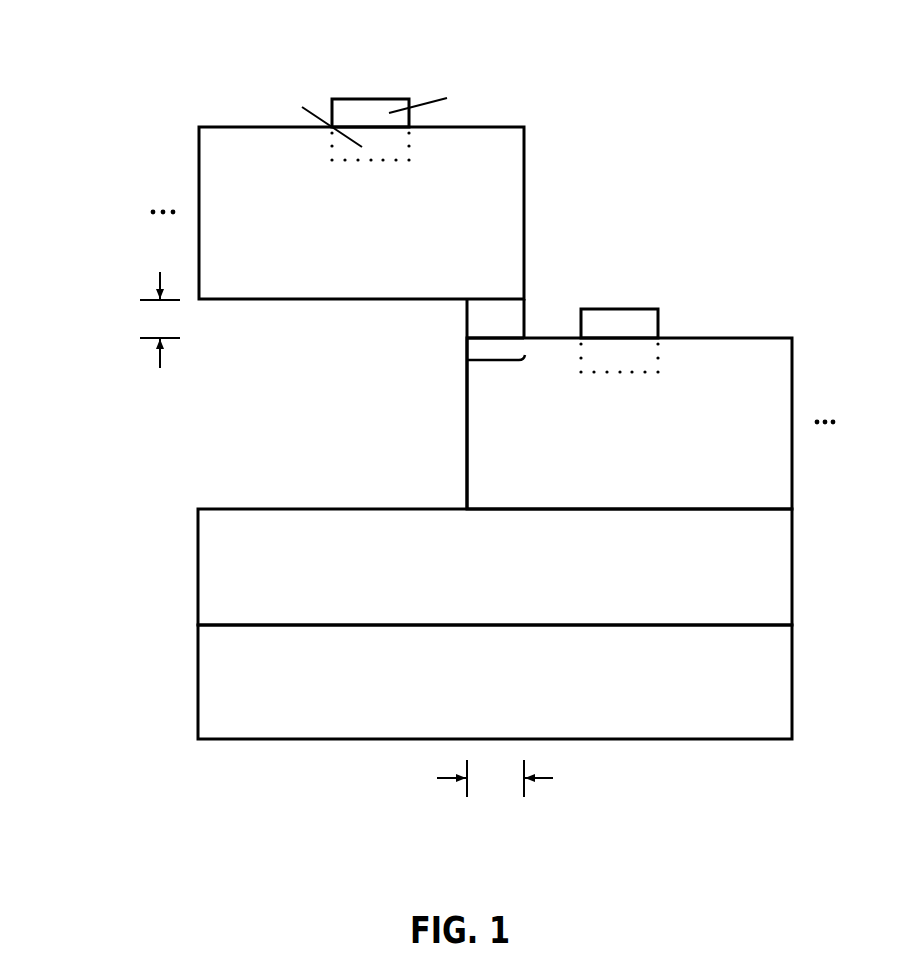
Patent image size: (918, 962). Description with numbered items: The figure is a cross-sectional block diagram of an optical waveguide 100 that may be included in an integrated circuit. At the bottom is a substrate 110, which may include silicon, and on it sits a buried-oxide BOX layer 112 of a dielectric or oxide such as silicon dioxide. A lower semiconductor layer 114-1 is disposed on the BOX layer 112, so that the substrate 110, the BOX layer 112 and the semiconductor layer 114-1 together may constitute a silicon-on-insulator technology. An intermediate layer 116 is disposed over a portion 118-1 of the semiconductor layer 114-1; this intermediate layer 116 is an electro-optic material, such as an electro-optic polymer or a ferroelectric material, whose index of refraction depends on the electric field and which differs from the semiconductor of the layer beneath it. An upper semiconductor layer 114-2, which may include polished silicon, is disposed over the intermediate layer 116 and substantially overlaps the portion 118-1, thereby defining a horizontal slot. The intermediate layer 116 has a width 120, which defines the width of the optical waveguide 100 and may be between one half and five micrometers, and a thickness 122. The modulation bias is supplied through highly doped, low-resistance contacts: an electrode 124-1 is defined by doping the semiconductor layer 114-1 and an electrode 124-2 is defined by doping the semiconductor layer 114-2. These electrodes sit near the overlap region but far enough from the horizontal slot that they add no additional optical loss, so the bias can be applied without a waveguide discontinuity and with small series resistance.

The optical waveguide 100 is at (687, 95).
The substrate 110 is at (513, 706).
The BOX layer 112 is at (477, 590).
The semiconductor layer 114-1 is at (657, 460).
The semiconductor layer 114-2 is at (334, 248).
The intermediate layer 116 is at (477, 310).
The portion 118-1 is at (497, 362).
The width 120 is at (495, 787).
The thickness 122 is at (142, 320).
The electrode 124-1 is at (581, 292).
The electrode 124-2 is at (409, 82).